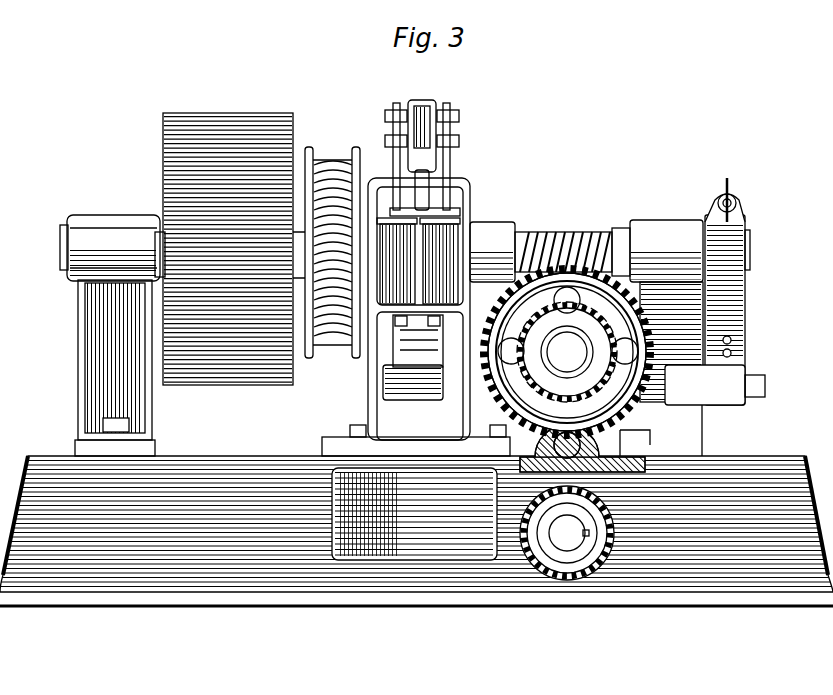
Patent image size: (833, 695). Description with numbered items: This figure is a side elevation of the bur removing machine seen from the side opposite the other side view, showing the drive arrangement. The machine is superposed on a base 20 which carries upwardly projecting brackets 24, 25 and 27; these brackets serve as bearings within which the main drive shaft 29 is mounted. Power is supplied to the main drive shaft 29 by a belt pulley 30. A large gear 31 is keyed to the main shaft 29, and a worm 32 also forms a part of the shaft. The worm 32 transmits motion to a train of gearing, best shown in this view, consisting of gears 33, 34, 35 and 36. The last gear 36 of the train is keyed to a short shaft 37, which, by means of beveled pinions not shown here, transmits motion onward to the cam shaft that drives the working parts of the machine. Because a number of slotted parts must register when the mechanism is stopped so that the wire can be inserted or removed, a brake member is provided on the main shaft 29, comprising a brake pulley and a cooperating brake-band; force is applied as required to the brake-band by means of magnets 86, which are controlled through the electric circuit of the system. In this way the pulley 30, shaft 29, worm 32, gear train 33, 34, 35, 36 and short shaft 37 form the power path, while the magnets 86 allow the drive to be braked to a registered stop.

The base 20 is at (416, 531).
The upwardly projecting bracket 24 is at (157, 423).
The upwardly projecting bracket 25 is at (360, 418).
The upwardly projecting bracket 27 is at (703, 440).
The main drive shaft 29 is at (748, 248).
The belt pulley 30 is at (337, 162).
The large gear 31 is at (207, 116).
The worm 32 is at (565, 235).
The gear 33 is at (567, 352).
The gear 34 is at (567, 352).
The gear 35 is at (567, 362).
The gear 36 is at (590, 514).
The short shaft 37 is at (575, 530).
The magnets 86 is at (397, 252).